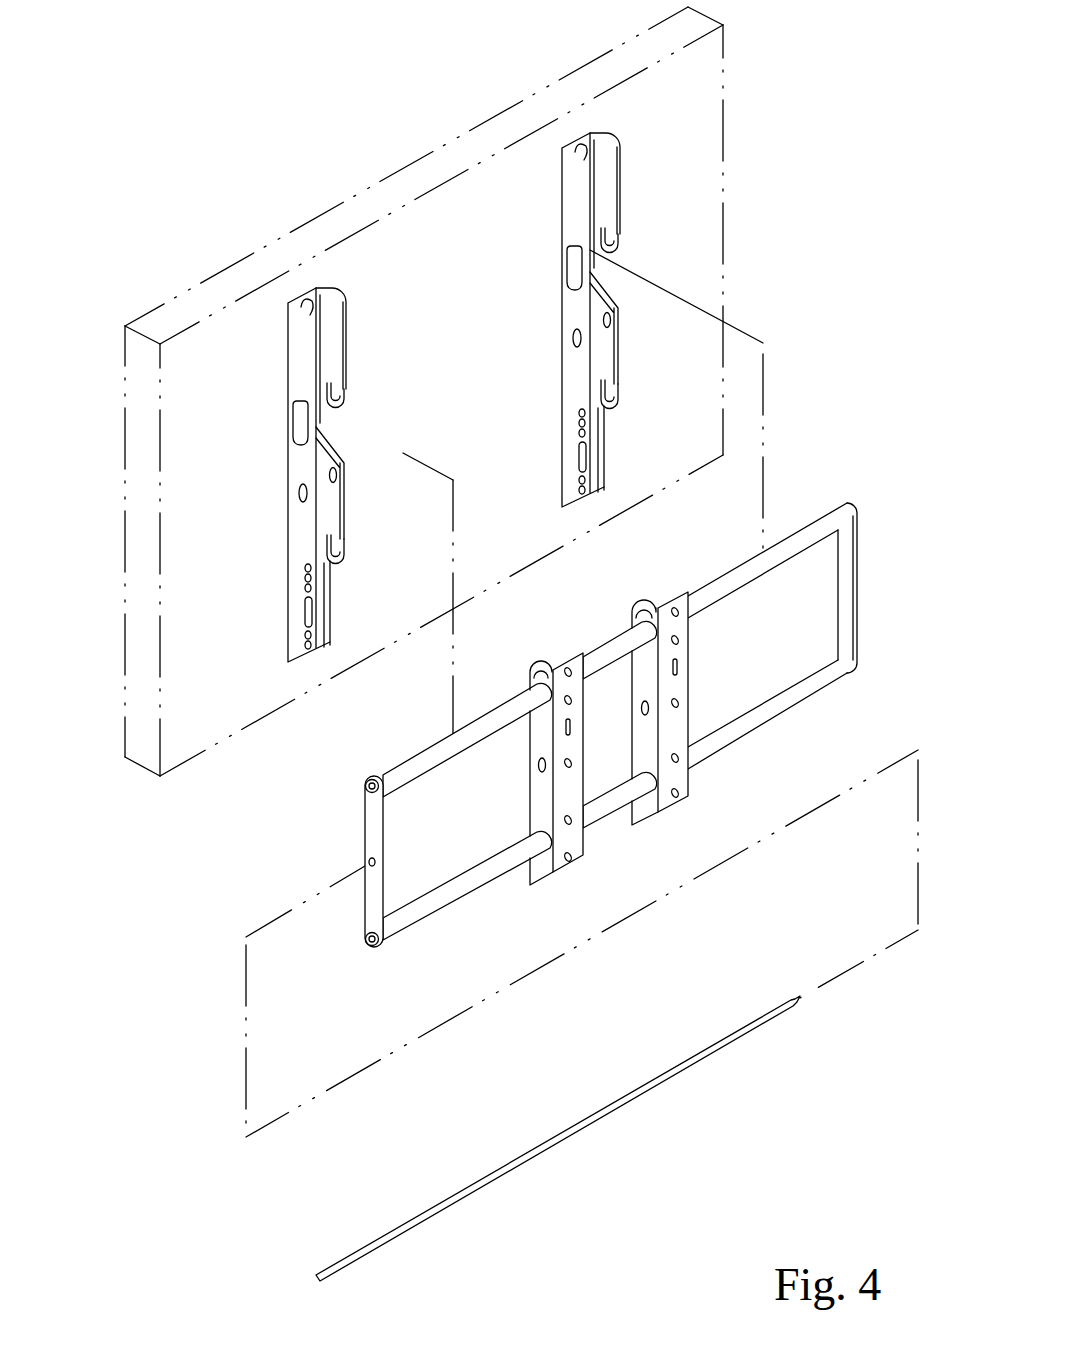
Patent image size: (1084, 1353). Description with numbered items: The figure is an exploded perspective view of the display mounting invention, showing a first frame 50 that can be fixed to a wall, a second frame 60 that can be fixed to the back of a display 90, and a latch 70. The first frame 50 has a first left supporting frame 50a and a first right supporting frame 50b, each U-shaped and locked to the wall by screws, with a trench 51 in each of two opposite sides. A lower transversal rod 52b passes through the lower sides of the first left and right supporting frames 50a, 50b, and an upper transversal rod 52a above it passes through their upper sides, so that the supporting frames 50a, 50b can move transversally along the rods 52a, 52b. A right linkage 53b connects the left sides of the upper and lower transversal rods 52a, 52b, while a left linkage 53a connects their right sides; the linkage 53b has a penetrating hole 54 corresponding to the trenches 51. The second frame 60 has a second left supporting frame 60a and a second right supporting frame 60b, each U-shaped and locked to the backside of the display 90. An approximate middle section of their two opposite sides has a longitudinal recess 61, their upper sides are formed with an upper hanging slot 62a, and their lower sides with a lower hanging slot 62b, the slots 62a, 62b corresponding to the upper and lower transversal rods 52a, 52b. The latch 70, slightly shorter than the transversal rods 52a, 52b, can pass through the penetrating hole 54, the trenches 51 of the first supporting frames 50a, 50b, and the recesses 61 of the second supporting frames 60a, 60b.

The display 90 is at (400, 168).
The second frame 60 is at (277, 316).
The second left supporting frame 60a is at (578, 190).
The second right supporting frame 60b is at (304, 345).
The longitudinal recess 61 is at (576, 340).
The upper hanging slot 62a is at (574, 266).
The lower hanging slot 62b is at (578, 406).
The first frame 50 is at (351, 773).
The first left supporting frame 50a is at (683, 727).
The first right supporting frame 50b is at (553, 812).
The trench 51 is at (540, 762).
The upper transversal rod 52a is at (616, 630).
The lower transversal rod 52b is at (607, 810).
The left linkage 53a is at (843, 620).
The right linkage 53b is at (370, 826).
The penetrating hole 54 is at (369, 861).
The latch 70 is at (556, 1132).